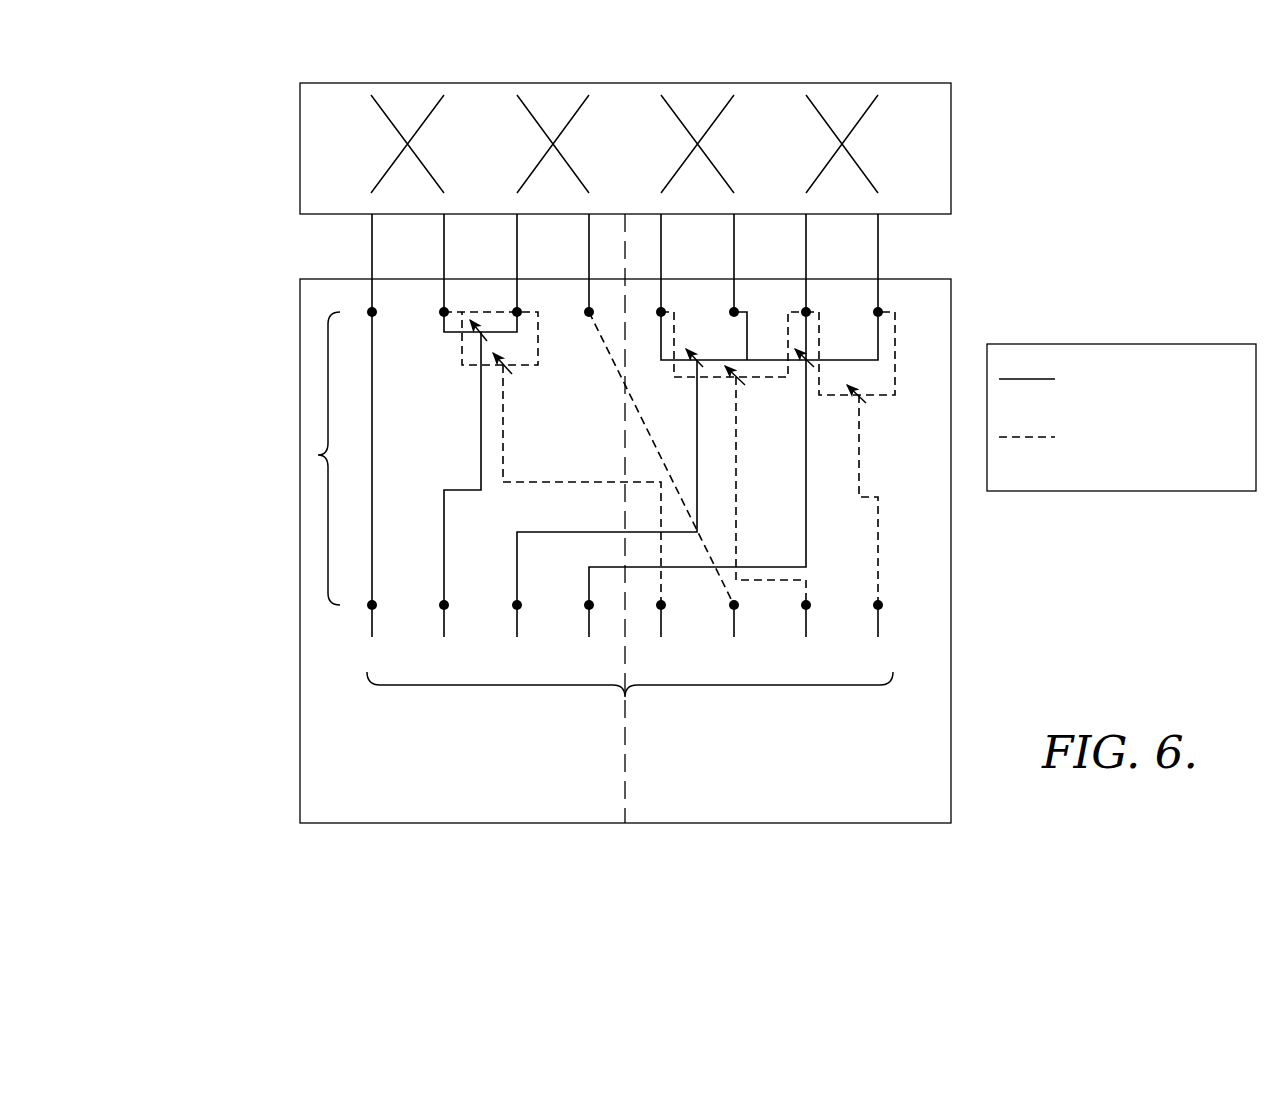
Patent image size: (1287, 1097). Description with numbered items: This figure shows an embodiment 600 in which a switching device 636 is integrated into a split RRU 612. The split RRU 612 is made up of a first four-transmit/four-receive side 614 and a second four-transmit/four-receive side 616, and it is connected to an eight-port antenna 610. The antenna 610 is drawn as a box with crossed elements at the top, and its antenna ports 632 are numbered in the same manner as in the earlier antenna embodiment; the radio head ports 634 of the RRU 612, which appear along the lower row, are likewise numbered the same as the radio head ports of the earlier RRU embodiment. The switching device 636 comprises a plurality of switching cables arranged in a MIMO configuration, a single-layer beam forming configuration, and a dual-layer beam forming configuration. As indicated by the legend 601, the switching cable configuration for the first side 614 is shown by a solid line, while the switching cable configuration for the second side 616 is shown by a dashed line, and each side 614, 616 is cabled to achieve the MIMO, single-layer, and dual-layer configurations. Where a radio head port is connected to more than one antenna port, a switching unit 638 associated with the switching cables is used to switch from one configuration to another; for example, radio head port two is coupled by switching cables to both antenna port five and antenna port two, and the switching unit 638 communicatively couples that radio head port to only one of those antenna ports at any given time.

The antenna system 600 is at (196, 144).
The legend 601 is at (1168, 344).
The 8-port antenna 610 is at (949, 83).
The split RRU 612 is at (951, 614).
The first 4T/4R side 614 is at (484, 789).
The second 4T/4R side 616 is at (783, 789).
The antenna ports 632 is at (924, 231).
The radio head ports 634 is at (625, 697).
The switching device 636 is at (318, 455).
The switching unit 638 is at (478, 338).